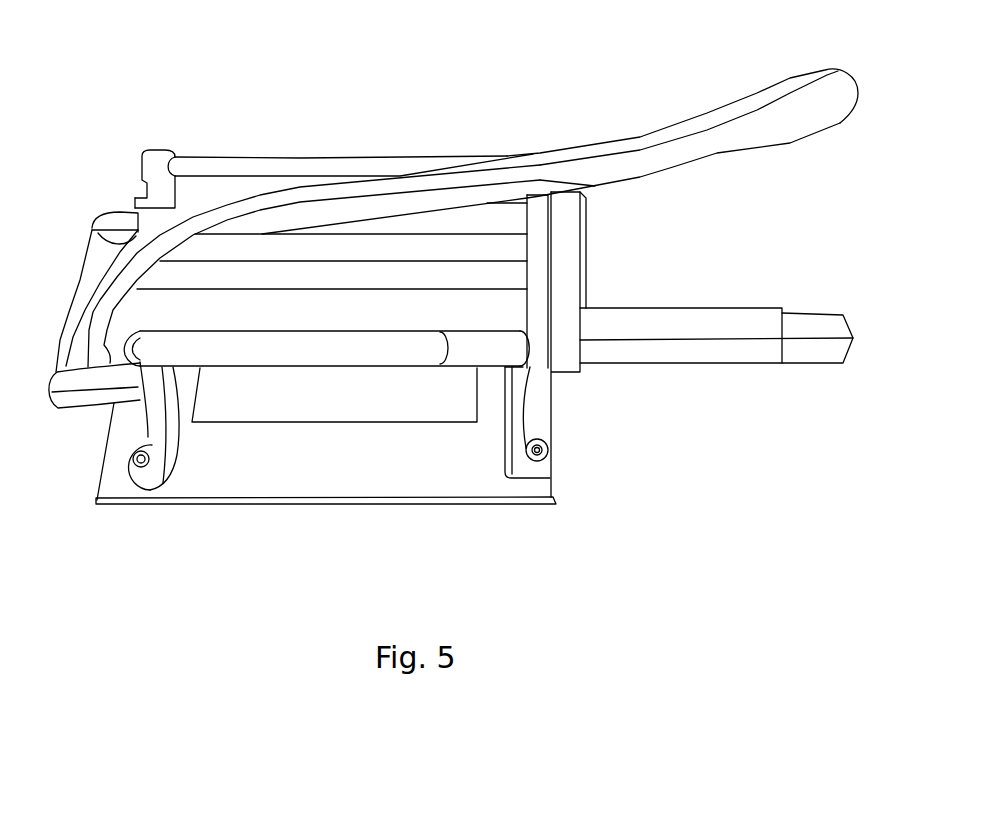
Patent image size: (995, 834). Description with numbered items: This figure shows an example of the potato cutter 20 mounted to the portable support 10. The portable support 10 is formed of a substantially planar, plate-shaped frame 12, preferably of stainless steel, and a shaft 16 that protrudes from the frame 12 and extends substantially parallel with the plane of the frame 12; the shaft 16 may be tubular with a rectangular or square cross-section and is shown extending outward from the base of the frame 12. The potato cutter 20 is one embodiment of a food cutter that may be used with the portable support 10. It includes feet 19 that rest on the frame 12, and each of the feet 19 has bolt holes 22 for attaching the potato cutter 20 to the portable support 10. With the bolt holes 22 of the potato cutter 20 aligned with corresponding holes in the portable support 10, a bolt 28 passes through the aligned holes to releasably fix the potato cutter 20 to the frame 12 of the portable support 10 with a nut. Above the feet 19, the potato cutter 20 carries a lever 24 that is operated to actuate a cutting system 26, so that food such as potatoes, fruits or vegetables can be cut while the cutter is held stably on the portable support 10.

The portable support 10 is at (207, 592).
The frame 12 is at (368, 480).
The shaft 16 is at (693, 353).
The feet 19 is at (155, 476).
The potato cutter 20 is at (492, 79).
The bolt holes 22 is at (140, 468).
The lever 24 is at (753, 118).
The cutting system 26 is at (342, 273).
The bolt 28 is at (127, 449).